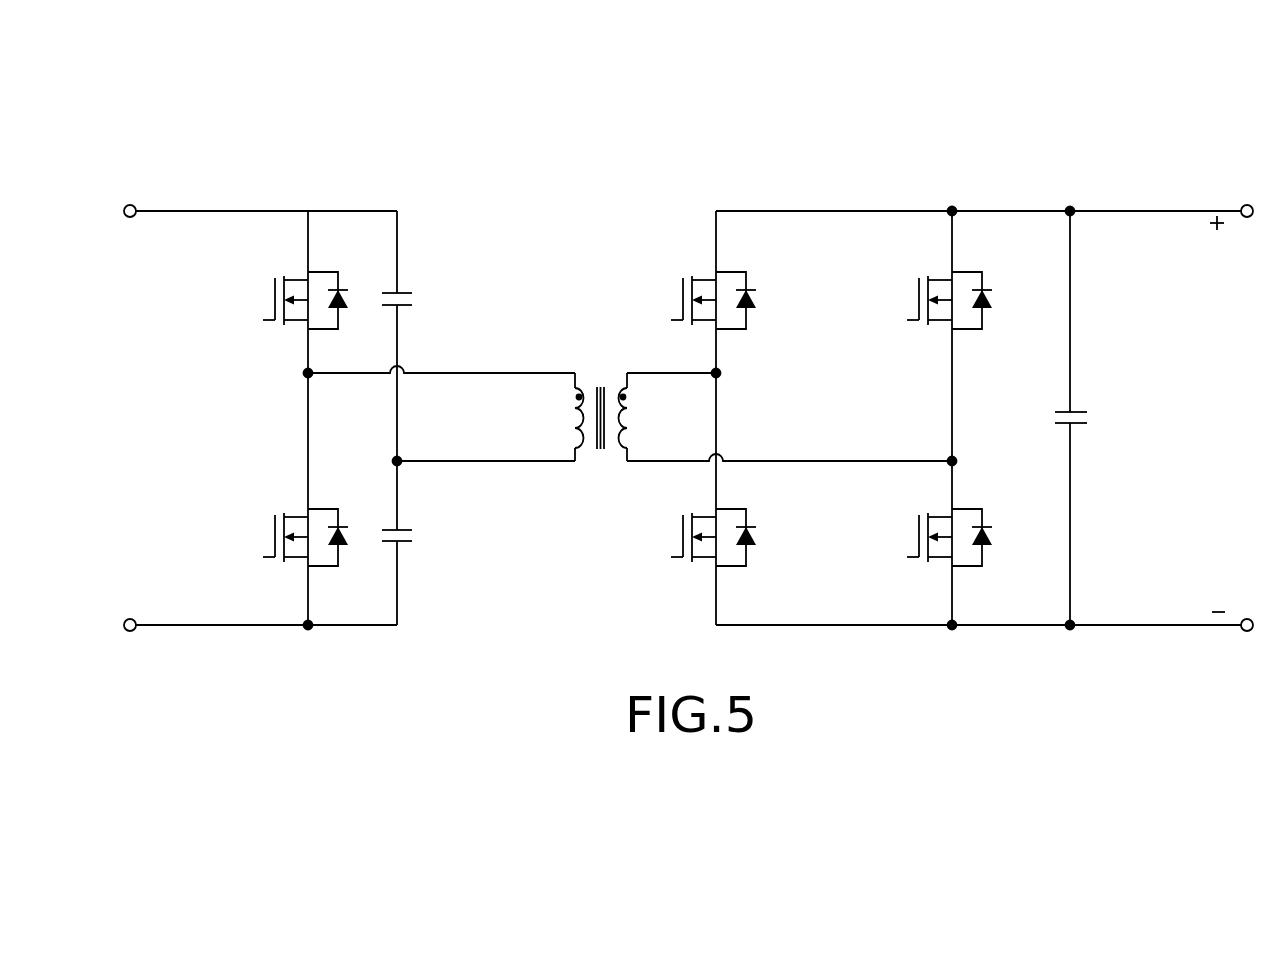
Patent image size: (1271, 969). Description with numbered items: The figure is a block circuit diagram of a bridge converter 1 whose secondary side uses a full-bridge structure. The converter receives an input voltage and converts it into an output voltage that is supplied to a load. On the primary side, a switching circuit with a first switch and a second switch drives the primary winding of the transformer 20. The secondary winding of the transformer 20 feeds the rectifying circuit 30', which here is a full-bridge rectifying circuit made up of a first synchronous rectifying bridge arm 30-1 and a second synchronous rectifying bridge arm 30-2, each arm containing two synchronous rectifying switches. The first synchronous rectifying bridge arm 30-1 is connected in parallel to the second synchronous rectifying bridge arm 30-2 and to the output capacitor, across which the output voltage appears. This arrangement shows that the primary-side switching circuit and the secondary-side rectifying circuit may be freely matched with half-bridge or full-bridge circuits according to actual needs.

The bridge converter 1 is at (342, 377).
The transformer 20 is at (601, 372).
The rectifying circuit 30' is at (945, 354).
The first synchronous rectifying bridge arm 30-1 is at (718, 190).
The second synchronous rectifying bridge arm 30-2 is at (950, 190).